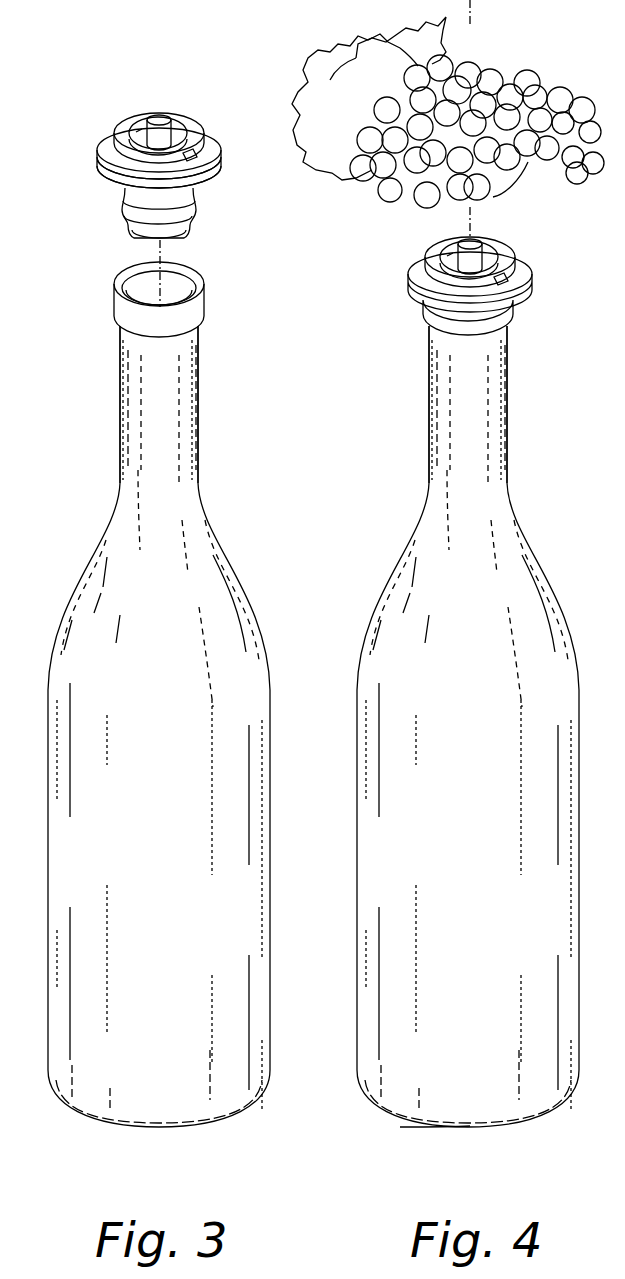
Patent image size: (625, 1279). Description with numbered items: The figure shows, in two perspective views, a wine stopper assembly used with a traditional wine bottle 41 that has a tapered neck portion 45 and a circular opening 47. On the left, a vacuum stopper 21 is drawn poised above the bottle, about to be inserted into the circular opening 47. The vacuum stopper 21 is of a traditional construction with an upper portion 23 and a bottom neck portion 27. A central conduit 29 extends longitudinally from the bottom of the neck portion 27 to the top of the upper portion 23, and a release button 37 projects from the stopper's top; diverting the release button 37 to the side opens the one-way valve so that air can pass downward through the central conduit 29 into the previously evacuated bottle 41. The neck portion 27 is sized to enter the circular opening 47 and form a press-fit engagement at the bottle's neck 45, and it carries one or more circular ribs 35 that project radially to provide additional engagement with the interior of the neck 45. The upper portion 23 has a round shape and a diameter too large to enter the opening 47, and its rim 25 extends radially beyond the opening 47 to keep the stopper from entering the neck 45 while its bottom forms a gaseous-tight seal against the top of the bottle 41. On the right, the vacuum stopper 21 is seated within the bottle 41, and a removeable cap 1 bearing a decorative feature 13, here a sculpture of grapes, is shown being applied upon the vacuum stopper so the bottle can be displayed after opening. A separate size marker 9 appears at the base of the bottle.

In FIG. 4, the removeable cap 1 is at (448, 117).
In FIG. 4, the bottle base 9 is at (470, 1130).
In FIG. 4, the decorative feature 13 is at (530, 82).
In FIG. 3, the vacuum stopper 21 is at (153, 148).
In FIG. 3, the upper portion 23 is at (131, 131).
In FIG. 4, the upper portion 23 is at (444, 257).
In FIG. 3, the rim 25 is at (110, 177).
In FIG. 3, the neck portion 27 is at (168, 221).
In FIG. 4, the neck portion 27 is at (474, 257).
In FIG. 3, the central conduit 29 is at (143, 120).
In FIG. 3, the circular ribs 35 is at (197, 220).
In FIG. 3, the release button 37 is at (160, 122).
In FIG. 4, the release button 37 is at (470, 250).
In FIG. 3, the wine bottle 41 is at (179, 694).
In FIG. 4, the wine bottle 41 is at (485, 743).
In FIG. 3, the neck portion 45 is at (140, 367).
In FIG. 4, the neck portion 45 is at (483, 378).
In FIG. 3, the circular opening 47 is at (143, 288).